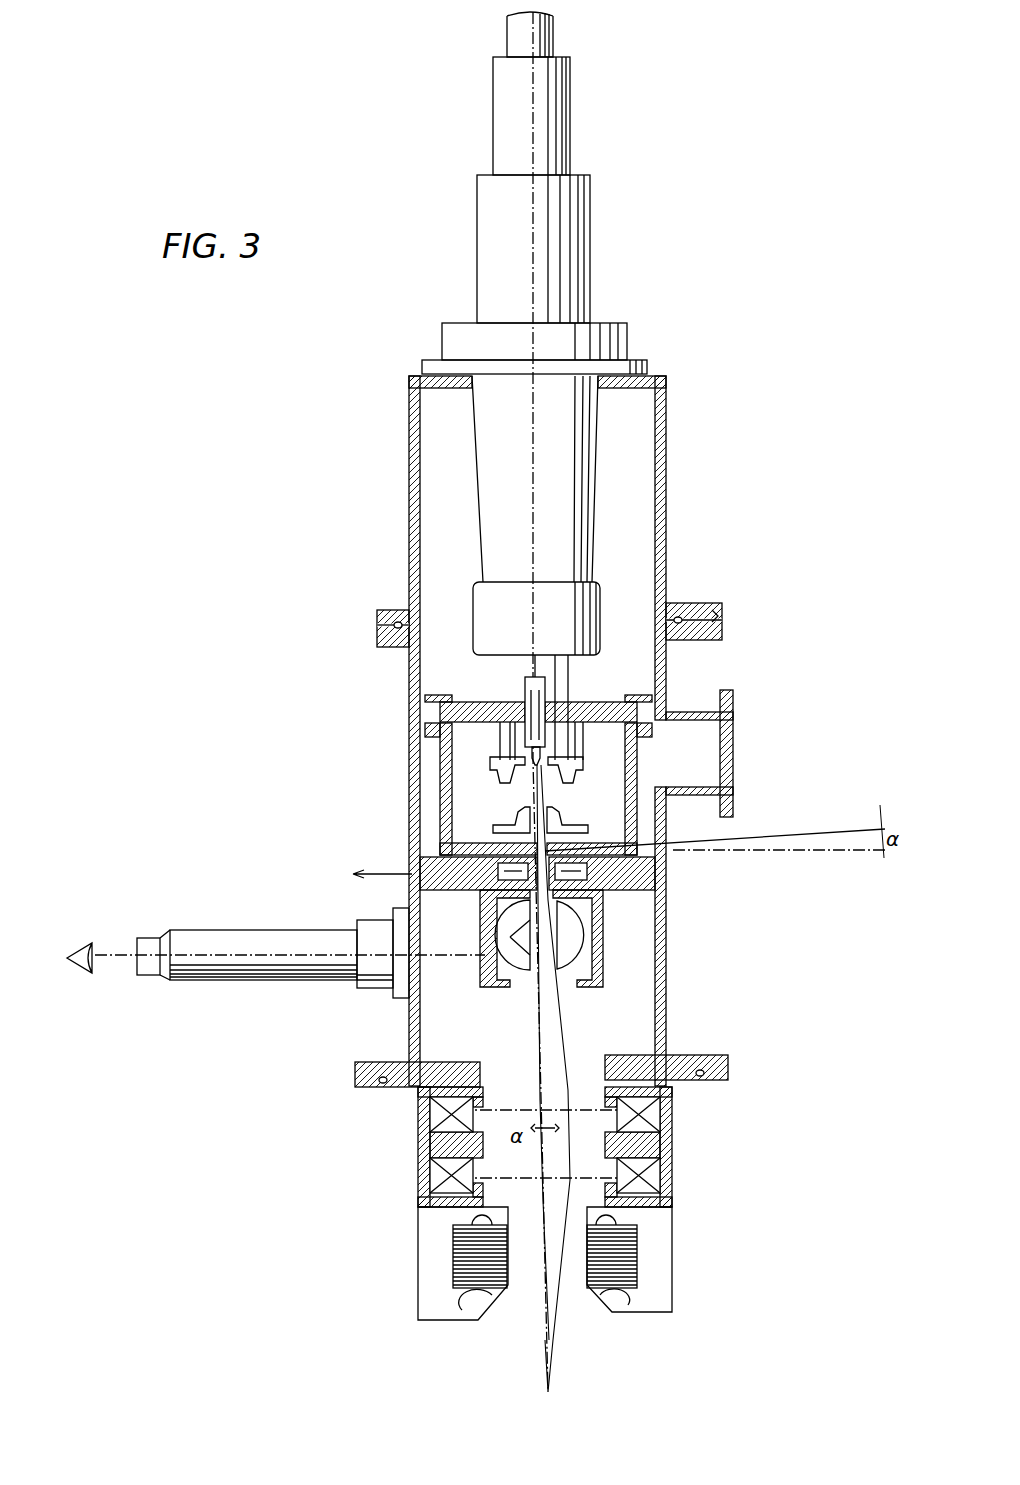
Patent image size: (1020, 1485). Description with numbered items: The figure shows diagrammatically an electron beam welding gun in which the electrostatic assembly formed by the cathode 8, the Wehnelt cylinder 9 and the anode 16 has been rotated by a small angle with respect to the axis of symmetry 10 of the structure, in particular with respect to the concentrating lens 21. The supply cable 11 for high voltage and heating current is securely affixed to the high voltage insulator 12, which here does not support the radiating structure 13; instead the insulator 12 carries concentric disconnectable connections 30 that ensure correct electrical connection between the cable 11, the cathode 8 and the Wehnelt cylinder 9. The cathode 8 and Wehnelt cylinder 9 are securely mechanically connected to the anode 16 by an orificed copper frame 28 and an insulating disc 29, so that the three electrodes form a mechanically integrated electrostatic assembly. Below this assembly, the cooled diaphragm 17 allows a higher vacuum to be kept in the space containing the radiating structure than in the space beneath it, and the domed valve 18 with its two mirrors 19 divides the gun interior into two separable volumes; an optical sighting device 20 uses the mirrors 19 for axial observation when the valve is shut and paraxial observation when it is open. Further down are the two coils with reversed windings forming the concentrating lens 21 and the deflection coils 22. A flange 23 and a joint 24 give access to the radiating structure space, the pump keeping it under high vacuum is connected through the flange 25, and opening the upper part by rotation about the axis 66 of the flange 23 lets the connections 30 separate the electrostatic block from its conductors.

The cathode 8 is at (528, 762).
The Wehnelt cylinder 9 is at (512, 772).
The axis of symmetry 10 is at (527, 28).
The supply cable 11 is at (497, 128).
The high voltage insulator 12 is at (478, 470).
The radiating structure 13 is at (575, 742).
The anode 16 is at (570, 824).
The cooled diaphragm 17 is at (660, 884).
The domed valve 18 is at (566, 950).
The mirrors 19 is at (512, 965).
The optical sighting device 20 is at (215, 932).
The concentrating lens 21 is at (432, 1175).
The deflection coils 22 is at (457, 1258).
The flange 23 is at (722, 632).
The joint 24 is at (679, 616).
The pump flange 25 is at (723, 773).
The orificed copper frame 28 is at (440, 755).
The insulating disc 29 is at (474, 700).
The concentric disconnectable connections 30 is at (555, 690).
The axis 66 is at (717, 606).